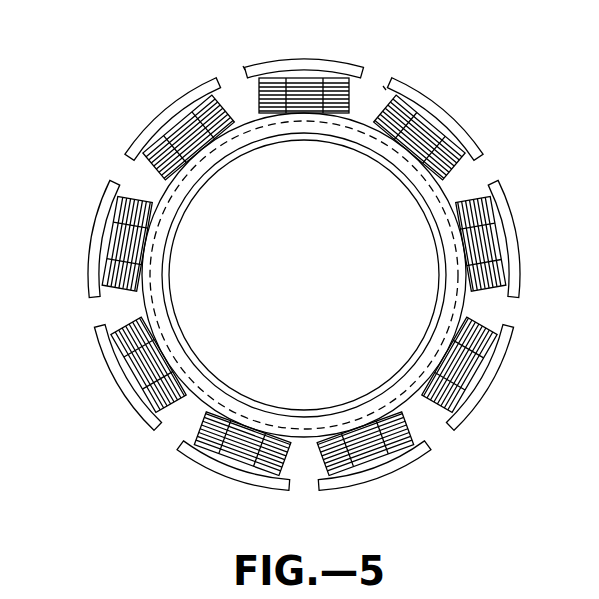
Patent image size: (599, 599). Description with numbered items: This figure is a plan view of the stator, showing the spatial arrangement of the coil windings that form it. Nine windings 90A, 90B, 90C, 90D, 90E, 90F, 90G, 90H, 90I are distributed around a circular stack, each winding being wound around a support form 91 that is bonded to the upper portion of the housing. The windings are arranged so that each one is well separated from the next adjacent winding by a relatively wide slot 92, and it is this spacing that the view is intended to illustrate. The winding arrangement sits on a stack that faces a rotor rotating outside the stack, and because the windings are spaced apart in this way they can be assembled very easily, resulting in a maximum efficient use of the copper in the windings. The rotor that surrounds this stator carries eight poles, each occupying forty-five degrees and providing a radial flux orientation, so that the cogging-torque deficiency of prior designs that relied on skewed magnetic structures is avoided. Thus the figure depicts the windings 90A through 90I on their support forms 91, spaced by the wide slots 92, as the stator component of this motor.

The winding 90A is at (422, 128).
The winding 90B is at (289, 92).
The winding 90C is at (190, 127).
The winding 90D is at (113, 246).
The winding 90E is at (178, 372).
The winding 90F is at (248, 447).
The winding 90G is at (372, 455).
The winding 90H is at (468, 366).
The winding 90I is at (487, 231).
The support form 91 is at (372, 94).
The slot 92 is at (231, 83).